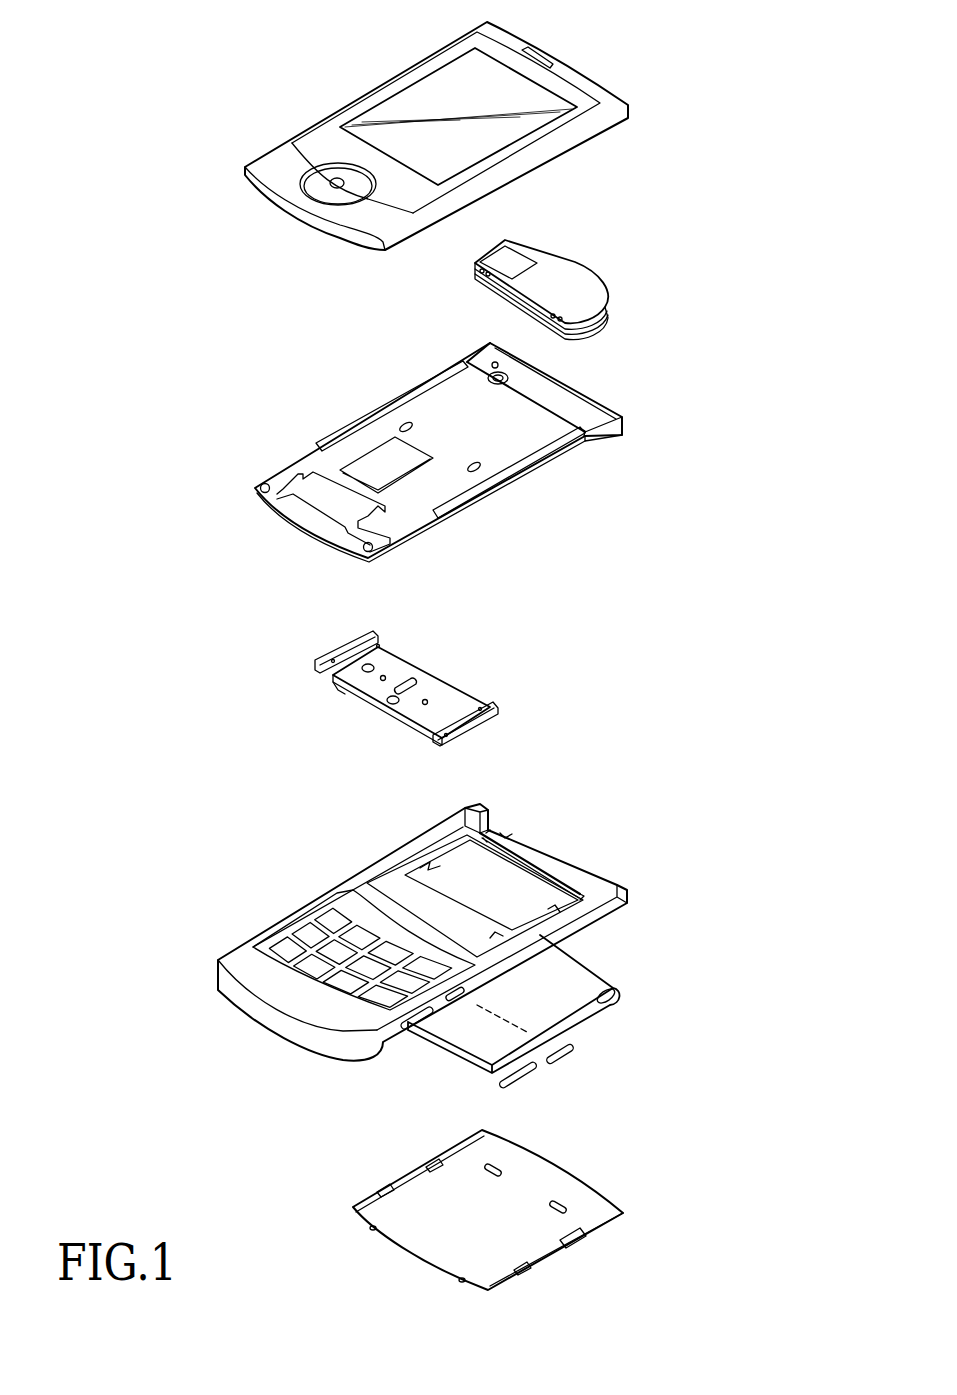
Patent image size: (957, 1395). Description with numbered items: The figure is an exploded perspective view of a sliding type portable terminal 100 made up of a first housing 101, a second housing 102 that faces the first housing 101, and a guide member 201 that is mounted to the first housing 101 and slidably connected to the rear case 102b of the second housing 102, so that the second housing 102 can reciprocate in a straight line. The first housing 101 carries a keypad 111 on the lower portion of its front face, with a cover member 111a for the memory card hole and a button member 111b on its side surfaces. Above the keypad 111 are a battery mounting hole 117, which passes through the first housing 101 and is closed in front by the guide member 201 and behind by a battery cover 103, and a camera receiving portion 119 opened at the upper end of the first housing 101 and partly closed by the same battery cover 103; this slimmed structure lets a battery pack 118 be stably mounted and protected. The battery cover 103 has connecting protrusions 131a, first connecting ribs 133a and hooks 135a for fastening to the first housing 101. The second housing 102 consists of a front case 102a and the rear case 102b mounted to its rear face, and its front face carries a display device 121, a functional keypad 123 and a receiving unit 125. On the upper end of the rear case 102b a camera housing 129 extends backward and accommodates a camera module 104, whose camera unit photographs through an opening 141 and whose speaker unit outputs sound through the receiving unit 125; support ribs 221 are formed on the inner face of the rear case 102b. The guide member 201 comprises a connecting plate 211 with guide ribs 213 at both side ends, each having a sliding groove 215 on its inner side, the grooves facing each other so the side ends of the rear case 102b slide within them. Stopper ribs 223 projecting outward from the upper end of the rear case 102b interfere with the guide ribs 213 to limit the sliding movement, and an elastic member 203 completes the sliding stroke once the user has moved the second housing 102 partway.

The sliding type portable terminal 100 is at (177, 101).
The first housing 101 is at (242, 1050).
The second housing 102 is at (122, 313).
The front case 102a is at (212, 285).
The rear case 102b is at (212, 408).
The battery cover 103 is at (405, 1135).
The camera module 104 is at (605, 272).
The keypad 111 is at (320, 932).
The cover member 111a is at (528, 1077).
The button member 111b is at (570, 1058).
The battery mounting hole 117 is at (488, 880).
The battery pack 118 is at (615, 989).
The camera receiving portion 119 is at (577, 877).
The display device 121 is at (507, 135).
The functional keypad 123 is at (317, 182).
The receiving unit 125 is at (550, 63).
The camera housing 129 is at (593, 447).
The connecting protrusions 131a is at (462, 1280).
The first connecting ribs 133a is at (383, 1190).
The hooks 135a is at (497, 1171).
The opening 141 is at (517, 377).
The guide member 201 is at (492, 678).
The elastic member 203 is at (375, 667).
The connecting plate 211 is at (435, 688).
The guide ribs 213 is at (323, 660).
The sliding grooves 215 is at (333, 676).
The support ribs 221 is at (390, 402).
The stopper ribs 223 is at (585, 437).